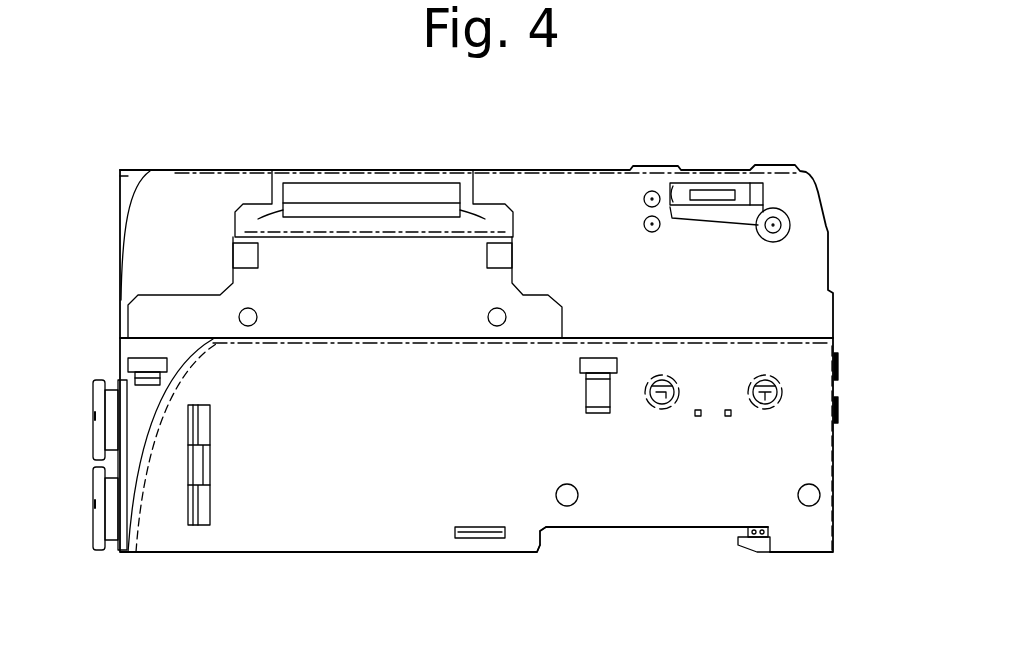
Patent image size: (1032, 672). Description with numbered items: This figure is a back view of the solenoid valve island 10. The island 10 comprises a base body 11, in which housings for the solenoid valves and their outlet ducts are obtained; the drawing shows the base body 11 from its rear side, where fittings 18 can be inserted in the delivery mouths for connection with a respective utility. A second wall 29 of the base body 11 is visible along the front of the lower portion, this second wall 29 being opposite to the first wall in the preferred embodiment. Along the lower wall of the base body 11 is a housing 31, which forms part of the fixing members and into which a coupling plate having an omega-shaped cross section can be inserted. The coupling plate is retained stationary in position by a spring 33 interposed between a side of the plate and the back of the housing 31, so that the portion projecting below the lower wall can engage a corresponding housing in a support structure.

The solenoid valve island 10 is at (830, 158).
The base body 11 is at (838, 519).
The fittings 18 is at (92, 530).
The second wall 29 is at (273, 510).
The housing 31 is at (550, 528).
The spring 33 is at (768, 540).